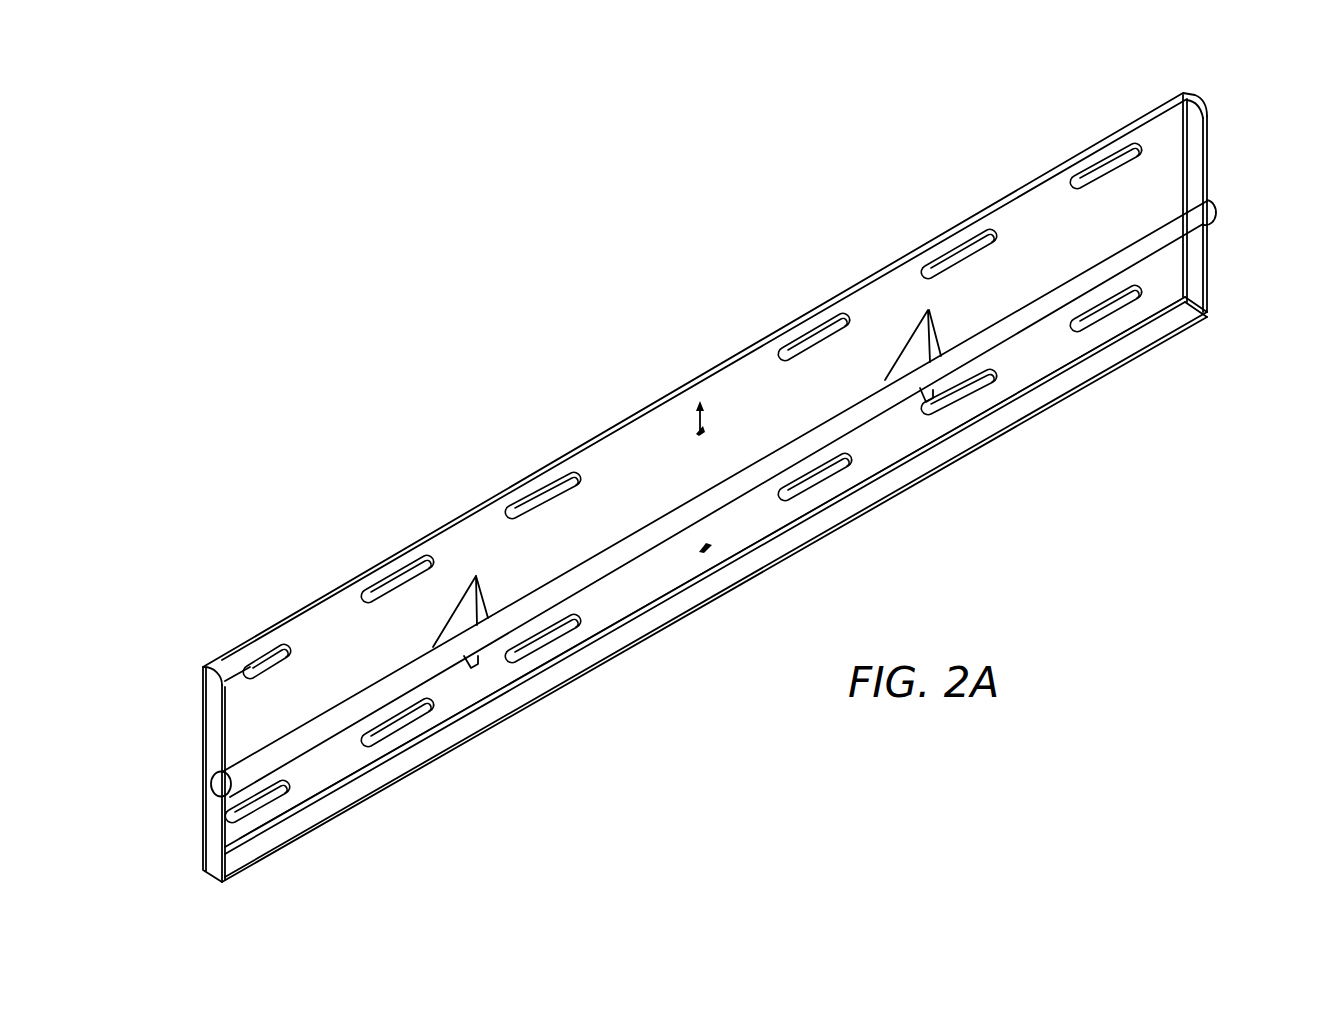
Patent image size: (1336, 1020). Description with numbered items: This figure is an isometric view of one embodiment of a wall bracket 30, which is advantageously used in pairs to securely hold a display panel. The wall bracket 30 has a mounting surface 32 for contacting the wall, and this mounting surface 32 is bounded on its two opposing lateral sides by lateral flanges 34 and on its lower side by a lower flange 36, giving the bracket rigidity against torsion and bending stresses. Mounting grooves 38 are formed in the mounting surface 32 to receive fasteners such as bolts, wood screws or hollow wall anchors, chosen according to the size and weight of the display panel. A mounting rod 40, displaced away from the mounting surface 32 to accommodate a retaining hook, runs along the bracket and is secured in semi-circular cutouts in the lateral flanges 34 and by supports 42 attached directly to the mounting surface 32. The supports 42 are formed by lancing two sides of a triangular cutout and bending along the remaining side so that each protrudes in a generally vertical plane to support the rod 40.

The wall bracket 30 is at (696, 238).
The mounting surface 32 is at (660, 438).
The lateral flanges 34 is at (218, 705).
The lower flange 36 is at (673, 606).
The mounting grooves 38 is at (1095, 316).
The mounting rod 40 is at (1178, 229).
The supports 42 is at (461, 590).